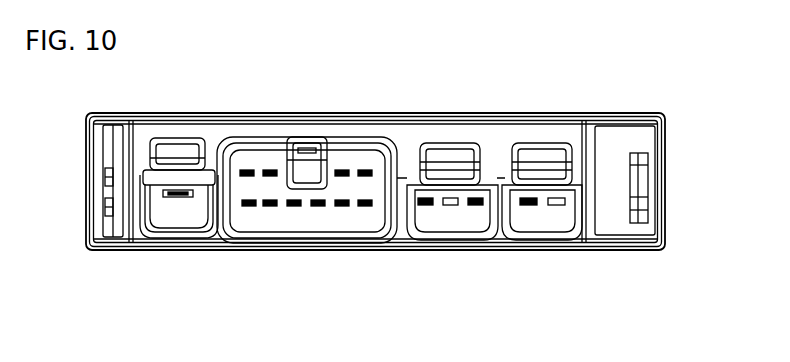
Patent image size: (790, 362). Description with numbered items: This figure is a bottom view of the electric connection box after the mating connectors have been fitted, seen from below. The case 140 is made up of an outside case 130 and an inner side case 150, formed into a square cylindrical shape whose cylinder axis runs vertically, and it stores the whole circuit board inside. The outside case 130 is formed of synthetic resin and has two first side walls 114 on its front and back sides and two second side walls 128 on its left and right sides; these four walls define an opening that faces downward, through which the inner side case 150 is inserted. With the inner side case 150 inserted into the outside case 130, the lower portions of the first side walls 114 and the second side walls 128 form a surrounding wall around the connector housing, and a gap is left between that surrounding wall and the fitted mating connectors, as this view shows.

The first side walls 114 is at (350, 112).
The second side walls 128 is at (85, 183).
The outside case 130 is at (523, 112).
The case 140 is at (612, 35).
The inner side case 150 is at (566, 120).